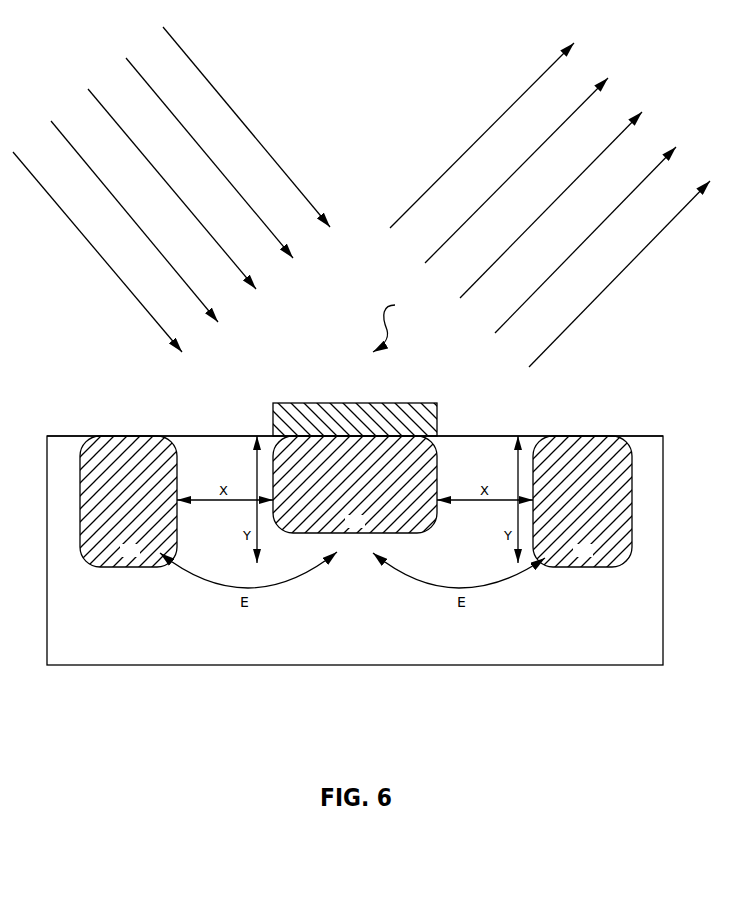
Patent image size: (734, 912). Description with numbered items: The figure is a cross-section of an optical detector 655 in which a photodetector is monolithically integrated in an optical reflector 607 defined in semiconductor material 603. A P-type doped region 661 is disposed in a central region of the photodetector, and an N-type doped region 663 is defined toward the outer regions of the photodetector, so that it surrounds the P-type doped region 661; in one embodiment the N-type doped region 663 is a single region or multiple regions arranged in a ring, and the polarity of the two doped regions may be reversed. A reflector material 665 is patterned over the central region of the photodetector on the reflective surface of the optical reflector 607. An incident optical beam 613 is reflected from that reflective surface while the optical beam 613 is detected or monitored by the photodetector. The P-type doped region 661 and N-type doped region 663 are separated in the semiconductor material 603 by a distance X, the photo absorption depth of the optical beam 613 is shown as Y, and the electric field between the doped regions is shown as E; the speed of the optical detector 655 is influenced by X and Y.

The semiconductor material 603 is at (663, 549).
The optical reflector 607 is at (643, 435).
The optical beam 613 is at (272, 107).
The optical detector 655 is at (401, 327).
The P-type doped region 661 is at (438, 477).
The N-type doped region 663 is at (127, 435).
The reflector material 665 is at (272, 435).